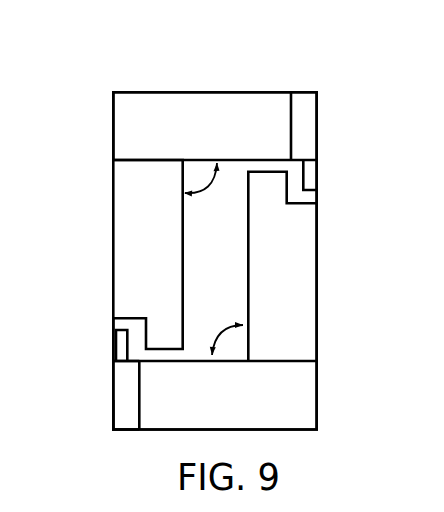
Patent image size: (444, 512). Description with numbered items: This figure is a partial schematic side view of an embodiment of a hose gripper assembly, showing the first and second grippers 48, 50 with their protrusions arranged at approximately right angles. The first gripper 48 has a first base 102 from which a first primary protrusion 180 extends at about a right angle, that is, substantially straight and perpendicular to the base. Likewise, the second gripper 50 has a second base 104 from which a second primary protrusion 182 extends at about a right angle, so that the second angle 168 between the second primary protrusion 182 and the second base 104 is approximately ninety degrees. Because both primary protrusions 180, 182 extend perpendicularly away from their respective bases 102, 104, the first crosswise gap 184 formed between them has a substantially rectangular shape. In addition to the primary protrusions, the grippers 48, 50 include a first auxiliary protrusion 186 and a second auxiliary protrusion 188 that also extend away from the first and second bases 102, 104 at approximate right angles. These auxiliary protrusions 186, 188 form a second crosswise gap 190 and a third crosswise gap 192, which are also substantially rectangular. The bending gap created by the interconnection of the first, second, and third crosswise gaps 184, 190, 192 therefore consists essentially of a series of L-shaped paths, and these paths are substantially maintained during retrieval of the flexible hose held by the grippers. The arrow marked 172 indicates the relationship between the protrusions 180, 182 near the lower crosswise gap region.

The first gripper 48 is at (250, 44).
The second gripper 50 is at (127, 443).
The first base 102 is at (177, 97).
The second base 104 is at (293, 405).
The second angle 168 is at (205, 178).
The gap / direction of movement 172 is at (233, 333).
The first primary protrusion 180 is at (123, 213).
The second primary protrusion 182 is at (285, 278).
The first crosswise gap 184 is at (227, 310).
The first auxiliary protrusion 186 is at (310, 178).
The second auxiliary protrusion 188 is at (122, 355).
The second crosswise gap 190 is at (137, 338).
The third crosswise gap 192 is at (292, 182).